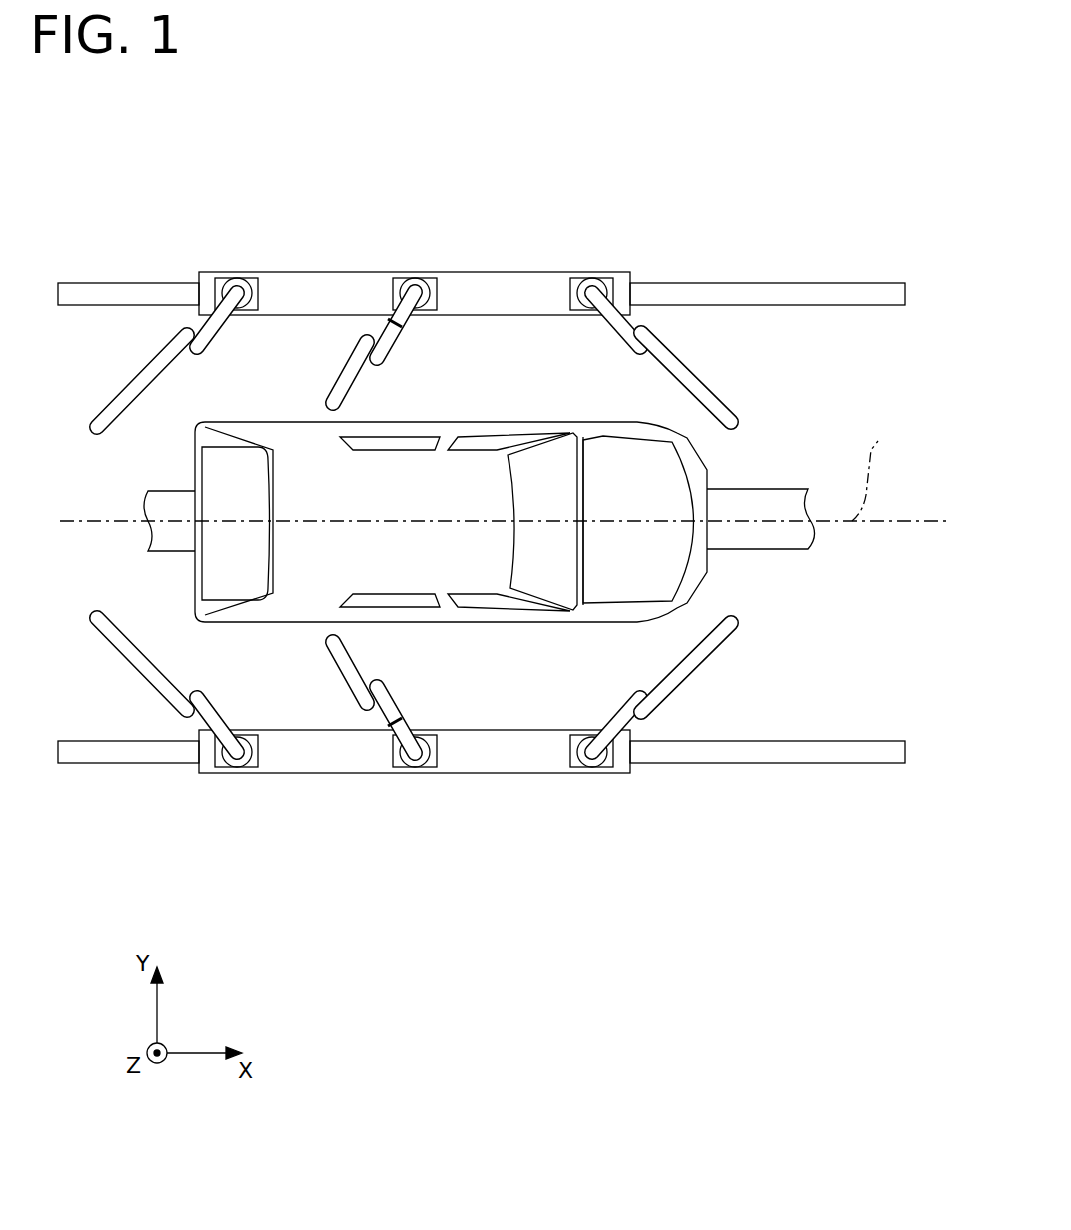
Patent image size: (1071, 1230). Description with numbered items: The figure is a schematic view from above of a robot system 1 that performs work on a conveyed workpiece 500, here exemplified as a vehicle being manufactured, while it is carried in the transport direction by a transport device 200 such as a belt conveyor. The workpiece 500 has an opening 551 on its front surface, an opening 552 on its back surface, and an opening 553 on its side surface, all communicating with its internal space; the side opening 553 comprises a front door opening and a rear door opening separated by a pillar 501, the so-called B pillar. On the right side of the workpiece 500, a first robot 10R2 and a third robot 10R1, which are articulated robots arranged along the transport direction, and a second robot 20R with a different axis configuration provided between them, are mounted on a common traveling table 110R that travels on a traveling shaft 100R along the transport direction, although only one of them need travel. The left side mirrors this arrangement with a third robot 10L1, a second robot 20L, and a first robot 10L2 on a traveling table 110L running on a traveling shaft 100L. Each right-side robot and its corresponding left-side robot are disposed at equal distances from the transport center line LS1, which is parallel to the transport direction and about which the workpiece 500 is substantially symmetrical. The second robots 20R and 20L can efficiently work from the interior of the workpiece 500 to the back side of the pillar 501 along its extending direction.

The robot system 1 is at (752, 184).
The third robot (left side) 10L1 is at (222, 258).
The first robot (left side) 10L2 is at (677, 340).
The third robot (right side) 10R1 is at (225, 702).
The first robot (right side) 10R2 is at (608, 707).
The second robot (left side) 20L is at (393, 263).
The second robot (right side) 20R is at (412, 713).
The traveling shaft (left side) 100L is at (720, 290).
The traveling shaft (right side) 100R is at (720, 770).
The traveling table (left side) 110L is at (490, 290).
The traveling table (right side) 110R is at (493, 755).
The transport device 200 is at (775, 488).
The workpiece 500 is at (565, 412).
The pillar 501 is at (445, 440).
The opening on the front surface 551 is at (525, 468).
The opening on the back surface 552 is at (213, 488).
The opening on the side surface 553 is at (375, 447).
The transport center line LS1 is at (892, 469).